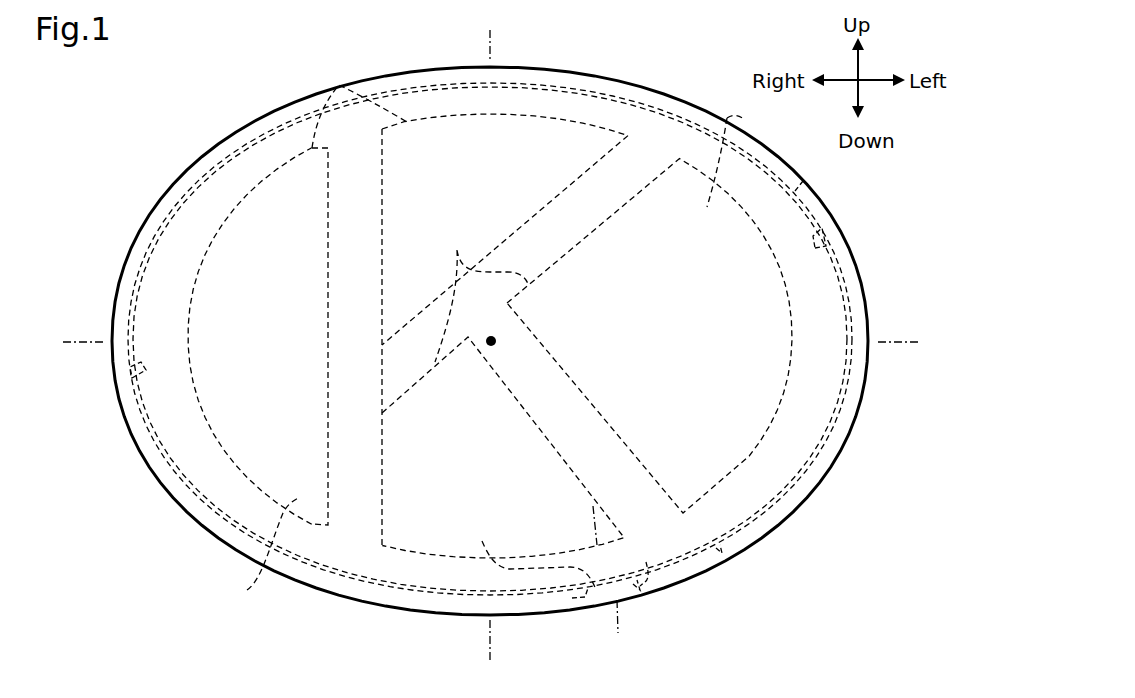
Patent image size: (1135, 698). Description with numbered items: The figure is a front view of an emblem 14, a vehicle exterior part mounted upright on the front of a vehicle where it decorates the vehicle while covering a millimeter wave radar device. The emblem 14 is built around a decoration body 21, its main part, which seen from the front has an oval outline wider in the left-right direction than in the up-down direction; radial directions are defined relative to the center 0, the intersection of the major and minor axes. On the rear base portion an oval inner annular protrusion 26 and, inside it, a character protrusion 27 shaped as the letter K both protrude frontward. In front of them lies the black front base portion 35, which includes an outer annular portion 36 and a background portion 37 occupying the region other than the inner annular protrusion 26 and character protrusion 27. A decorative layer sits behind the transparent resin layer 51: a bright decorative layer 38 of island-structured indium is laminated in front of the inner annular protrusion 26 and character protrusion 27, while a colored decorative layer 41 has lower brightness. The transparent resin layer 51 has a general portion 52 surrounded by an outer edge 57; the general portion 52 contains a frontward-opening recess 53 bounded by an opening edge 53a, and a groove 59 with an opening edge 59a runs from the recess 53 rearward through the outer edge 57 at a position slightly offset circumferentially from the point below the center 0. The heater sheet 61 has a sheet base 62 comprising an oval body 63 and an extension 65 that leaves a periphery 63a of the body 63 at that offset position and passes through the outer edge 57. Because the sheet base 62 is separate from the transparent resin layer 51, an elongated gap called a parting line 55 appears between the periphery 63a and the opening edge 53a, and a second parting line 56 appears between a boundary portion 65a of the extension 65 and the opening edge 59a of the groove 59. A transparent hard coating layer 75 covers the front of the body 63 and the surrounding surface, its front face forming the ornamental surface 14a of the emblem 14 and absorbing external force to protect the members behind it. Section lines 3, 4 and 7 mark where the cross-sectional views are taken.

The emblem 14 is at (204, 104).
The ornamental surface 14a is at (182, 449).
The hard coating layer 75 is at (592, 105).
The background portion 37 is at (420, 190).
The colored decorative layer 41 is at (339, 85).
The center 0 is at (495, 339).
The inner annular protrusion 26 is at (192, 370).
The character protrusion 27 is at (328, 400).
The bright decorative layer 38 is at (749, 456).
The periphery 63a is at (715, 178).
The parting line 55 is at (805, 185).
The recess 53 is at (877, 244).
The opening edge 53a is at (825, 228).
The front base portion 35 is at (108, 420).
The outer annular portion 36 is at (133, 377).
The decoration body 21 is at (209, 566).
The transparent resin layer 51 is at (213, 561).
The outer edge 57 is at (212, 520).
The general portion 52 is at (247, 590).
The groove 59 is at (522, 537).
The opening edge 59a is at (524, 552).
The parting line 56 is at (572, 598).
The boundary portion 65a is at (646, 562).
The heater sheet 61 is at (726, 601).
The sheet base 62 is at (721, 593).
The body 63 is at (720, 553).
The extension 65 is at (633, 584).
The section line 3- 3 is at (467, 665).
The section line 4- 4 is at (924, 370).
The section line 7- 7 is at (594, 649).